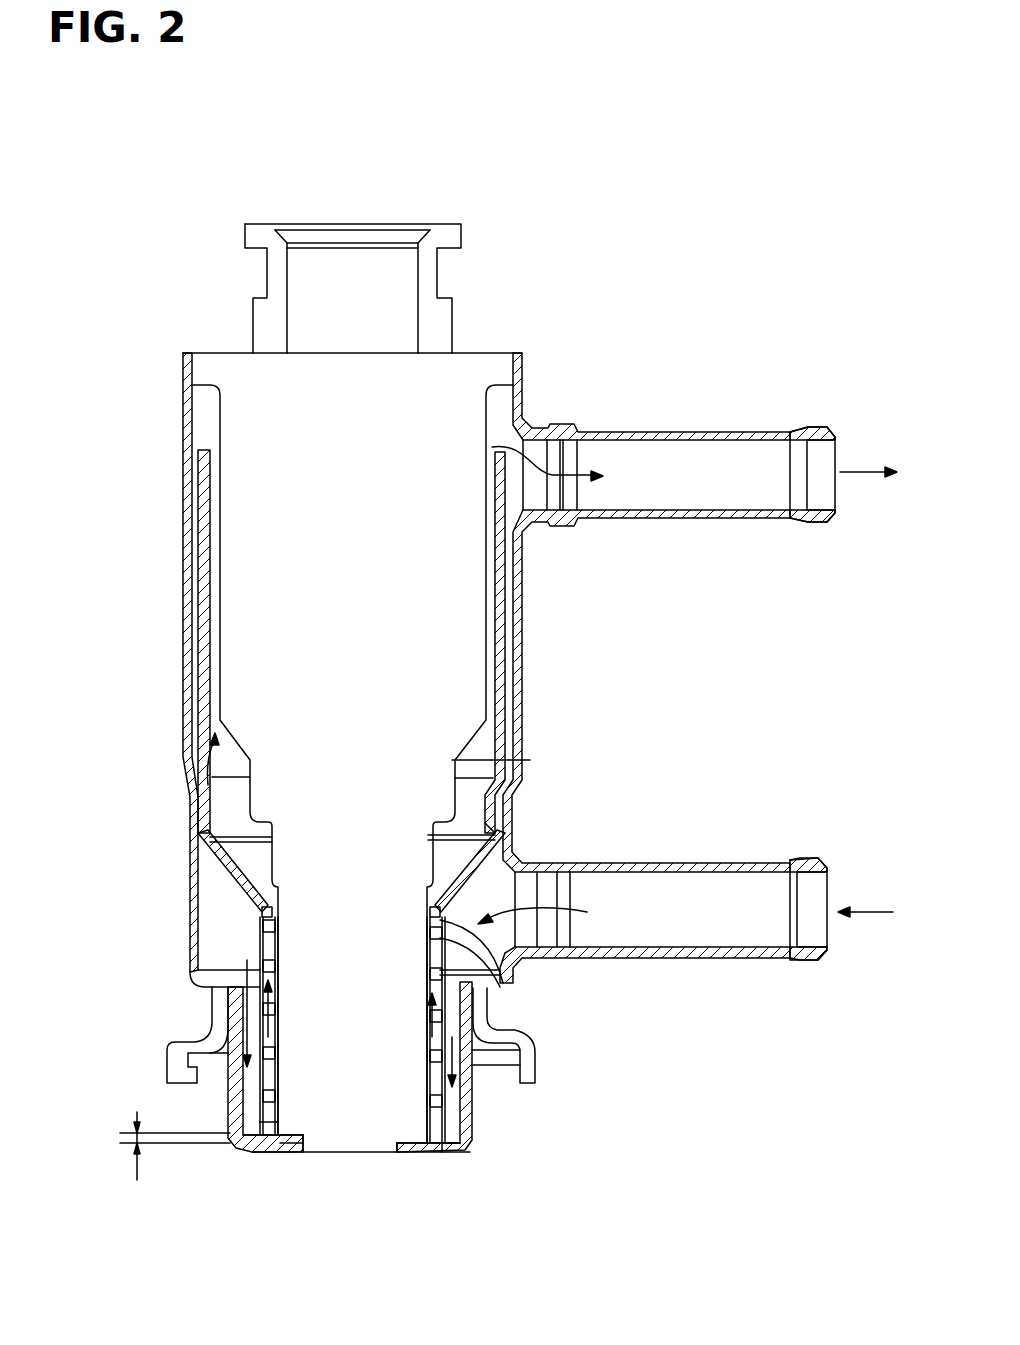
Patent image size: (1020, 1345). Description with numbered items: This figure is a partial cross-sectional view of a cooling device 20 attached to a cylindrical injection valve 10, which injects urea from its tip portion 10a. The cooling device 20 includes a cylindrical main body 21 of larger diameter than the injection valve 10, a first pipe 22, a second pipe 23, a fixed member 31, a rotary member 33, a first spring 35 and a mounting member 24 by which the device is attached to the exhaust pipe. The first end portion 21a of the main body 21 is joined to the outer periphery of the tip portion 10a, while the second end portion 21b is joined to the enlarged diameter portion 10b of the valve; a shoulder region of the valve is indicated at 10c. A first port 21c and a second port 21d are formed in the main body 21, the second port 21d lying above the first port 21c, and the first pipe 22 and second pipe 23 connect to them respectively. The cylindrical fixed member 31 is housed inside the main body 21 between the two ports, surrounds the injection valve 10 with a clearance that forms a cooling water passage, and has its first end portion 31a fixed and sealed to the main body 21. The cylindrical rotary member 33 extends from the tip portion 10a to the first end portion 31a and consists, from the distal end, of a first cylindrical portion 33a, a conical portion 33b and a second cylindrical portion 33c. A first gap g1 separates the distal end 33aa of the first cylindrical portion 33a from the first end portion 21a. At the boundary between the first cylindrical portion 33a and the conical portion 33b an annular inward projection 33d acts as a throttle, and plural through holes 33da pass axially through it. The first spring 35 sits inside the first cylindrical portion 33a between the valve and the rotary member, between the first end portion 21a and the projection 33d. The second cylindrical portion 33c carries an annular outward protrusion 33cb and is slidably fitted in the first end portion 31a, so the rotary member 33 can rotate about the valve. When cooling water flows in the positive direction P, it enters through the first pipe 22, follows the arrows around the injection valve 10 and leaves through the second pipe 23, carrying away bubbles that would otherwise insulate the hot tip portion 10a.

The injection valve 10 is at (399, 739).
The tip portion 10a is at (352, 1130).
The enlarged diameter portion 10b is at (498, 365).
The shoulder of housing 10c is at (530, 760).
The cooling device 20 is at (492, 766).
The main body 21 is at (523, 390).
The first end portion 21a is at (415, 1155).
The second end portion 21b is at (185, 383).
The first port 21c is at (530, 860).
The second port 21d is at (543, 527).
The first pipe 22 is at (696, 898).
The second pipe 23 is at (757, 430).
The mounting member 24 is at (530, 1037).
The fixed member 31 is at (384, 646).
The first end portion 31a is at (505, 781).
The rotary member 33 is at (362, 989).
The first cylindrical portion 33a is at (230, 1082).
The distal end 33aa is at (442, 1153).
The conical portion 33b is at (230, 883).
The second cylindrical portion 33c is at (210, 780).
The protrusion 33cb is at (498, 827).
The projection 33d is at (502, 990).
The through hole 33da is at (257, 907).
The first spring 35 is at (270, 1100).
The first gap g1 is at (165, 1146).
The positive direction P is at (865, 931).